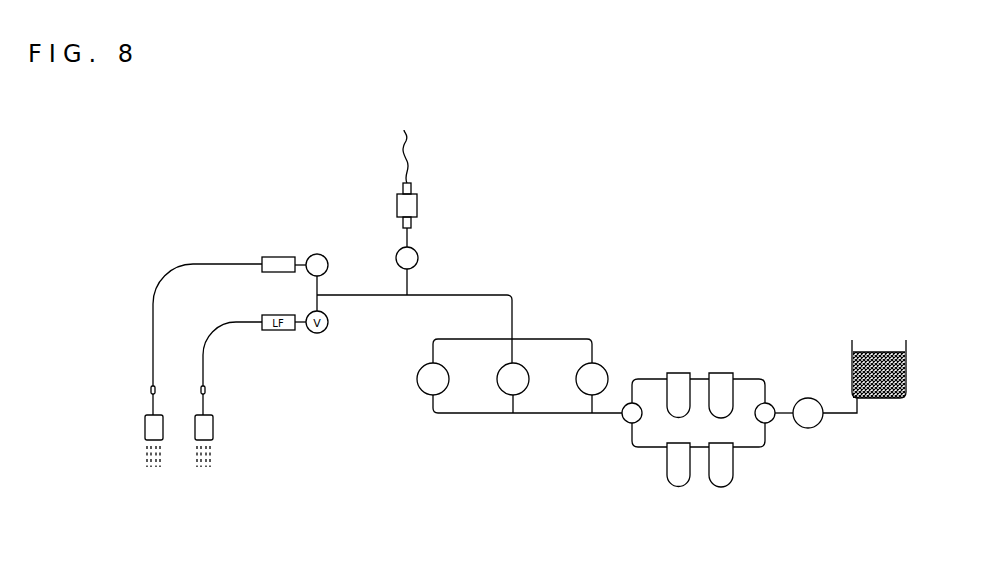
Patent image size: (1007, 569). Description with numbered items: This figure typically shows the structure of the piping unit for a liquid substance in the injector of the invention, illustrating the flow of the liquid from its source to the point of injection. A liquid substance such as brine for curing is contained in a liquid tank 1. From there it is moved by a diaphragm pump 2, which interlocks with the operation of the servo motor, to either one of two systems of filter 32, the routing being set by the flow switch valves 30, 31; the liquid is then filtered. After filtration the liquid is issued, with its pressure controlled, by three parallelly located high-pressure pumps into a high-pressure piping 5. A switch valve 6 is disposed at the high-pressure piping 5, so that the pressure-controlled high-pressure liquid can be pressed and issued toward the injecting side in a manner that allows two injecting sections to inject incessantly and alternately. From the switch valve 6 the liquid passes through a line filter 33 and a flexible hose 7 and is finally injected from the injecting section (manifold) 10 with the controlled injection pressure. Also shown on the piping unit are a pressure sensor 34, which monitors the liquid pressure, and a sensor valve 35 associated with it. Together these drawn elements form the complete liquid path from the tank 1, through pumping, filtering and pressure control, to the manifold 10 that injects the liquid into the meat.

The liquid tank 1 is at (848, 370).
The diaphragm pump 2 is at (815, 428).
The high-pressure piping 5 is at (518, 318).
The switch valve 6 is at (330, 263).
The flexible hose 7 is at (153, 327).
The injecting section (manifold) 10 is at (218, 425).
The flow switch valve 30 is at (772, 423).
The flow switch valve 31 is at (622, 422).
The filter 32 is at (724, 372).
The line filter 33 is at (283, 256).
The pressure sensor 34 is at (419, 206).
The sensor valve 35 is at (419, 256).